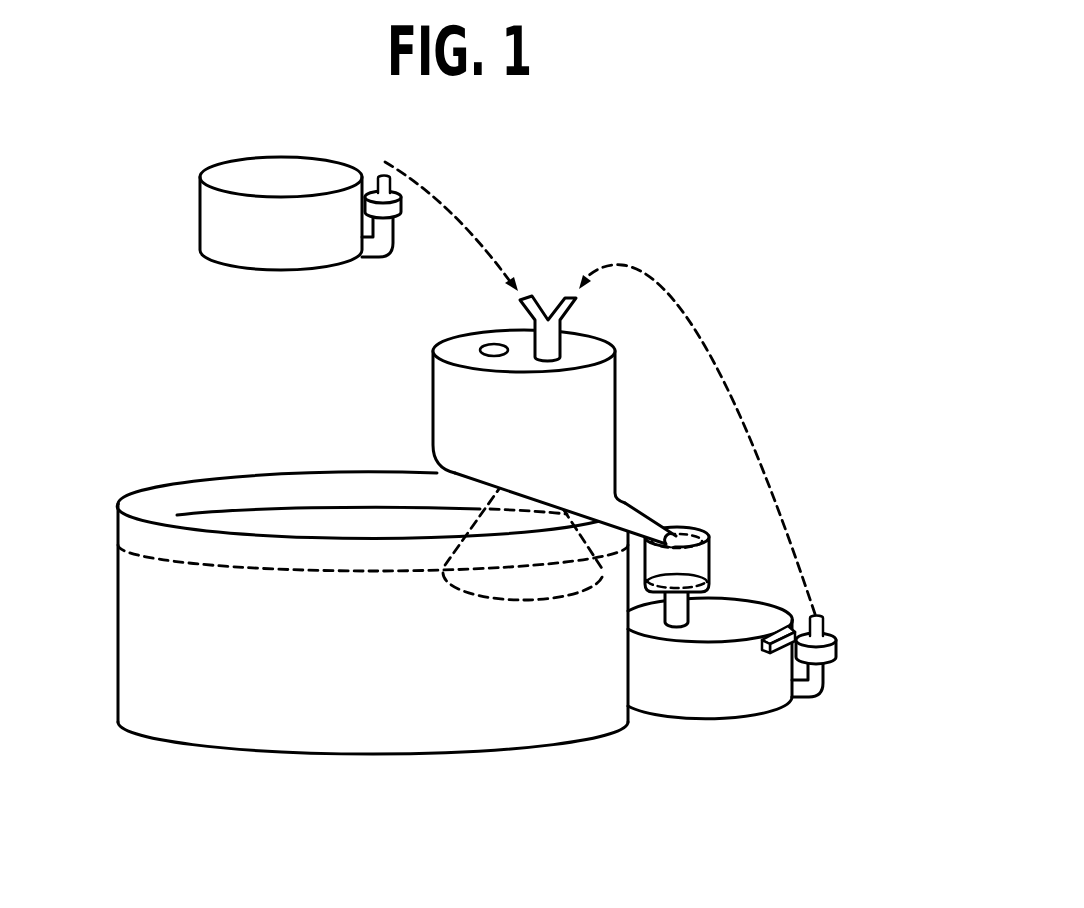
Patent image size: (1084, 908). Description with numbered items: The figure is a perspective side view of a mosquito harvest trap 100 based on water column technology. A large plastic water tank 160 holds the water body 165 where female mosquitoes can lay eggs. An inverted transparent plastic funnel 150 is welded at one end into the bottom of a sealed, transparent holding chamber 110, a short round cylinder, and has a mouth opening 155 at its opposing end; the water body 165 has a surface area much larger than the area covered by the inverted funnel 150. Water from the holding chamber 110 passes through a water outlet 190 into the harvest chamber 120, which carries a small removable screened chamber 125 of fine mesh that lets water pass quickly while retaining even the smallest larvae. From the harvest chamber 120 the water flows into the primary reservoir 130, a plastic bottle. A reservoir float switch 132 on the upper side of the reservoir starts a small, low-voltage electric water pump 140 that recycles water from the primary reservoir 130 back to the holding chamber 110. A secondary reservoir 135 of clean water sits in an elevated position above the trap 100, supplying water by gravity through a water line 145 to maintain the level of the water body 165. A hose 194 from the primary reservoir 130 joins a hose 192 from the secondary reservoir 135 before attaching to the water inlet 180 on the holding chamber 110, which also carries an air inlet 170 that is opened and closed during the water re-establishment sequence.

The mosquito harvest trap 100 is at (240, 450).
The holding chamber 110 is at (433, 384).
The harvest chamber 120 is at (727, 574).
The screened chamber 125 is at (716, 551).
The primary reservoir 130 is at (690, 720).
The reservoir float switch 132 is at (745, 654).
The secondary reservoir 135 is at (258, 245).
The water pump 140 is at (852, 642).
The water line 145 is at (373, 190).
The inverted funnel 150 is at (476, 518).
The mouth opening 155 is at (528, 613).
The water tank 160 is at (106, 621).
The water body 165 is at (412, 723).
The air inlet 170 is at (491, 344).
The water inlet 180 is at (548, 363).
The water outlet 190 is at (648, 513).
The hose 192 is at (534, 297).
The hose 194 is at (573, 301).